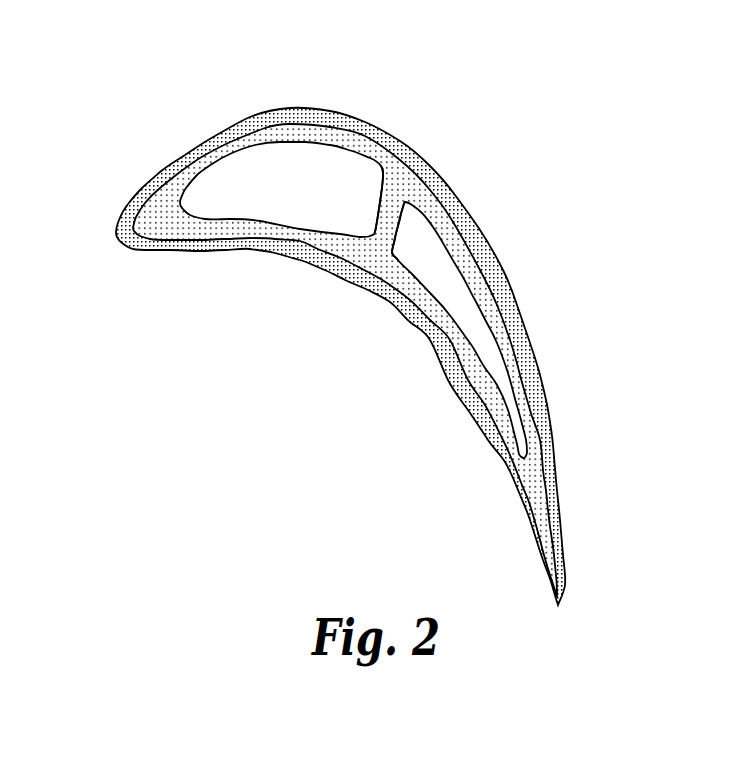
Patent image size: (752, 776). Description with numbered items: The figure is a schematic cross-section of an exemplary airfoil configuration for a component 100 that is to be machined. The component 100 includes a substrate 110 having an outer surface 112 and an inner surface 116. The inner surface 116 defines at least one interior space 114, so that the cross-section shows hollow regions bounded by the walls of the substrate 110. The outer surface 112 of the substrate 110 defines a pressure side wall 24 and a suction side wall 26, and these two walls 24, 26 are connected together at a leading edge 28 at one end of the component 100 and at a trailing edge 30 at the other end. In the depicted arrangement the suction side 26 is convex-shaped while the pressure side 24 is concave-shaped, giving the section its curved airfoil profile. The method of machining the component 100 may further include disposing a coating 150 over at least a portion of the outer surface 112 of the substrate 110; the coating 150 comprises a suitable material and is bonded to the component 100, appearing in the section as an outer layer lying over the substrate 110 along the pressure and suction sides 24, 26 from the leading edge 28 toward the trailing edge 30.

The component 100 is at (351, 358).
The pressure side wall 24 is at (452, 185).
The suction side wall 26 is at (390, 300).
The leading edge 28 is at (119, 237).
The trailing edge 30 is at (558, 606).
The substrate 110 is at (410, 188).
The outer surface 112 is at (508, 402).
The interior space 114 is at (313, 163).
The inner surface 116 is at (448, 245).
The coating 150 is at (490, 260).